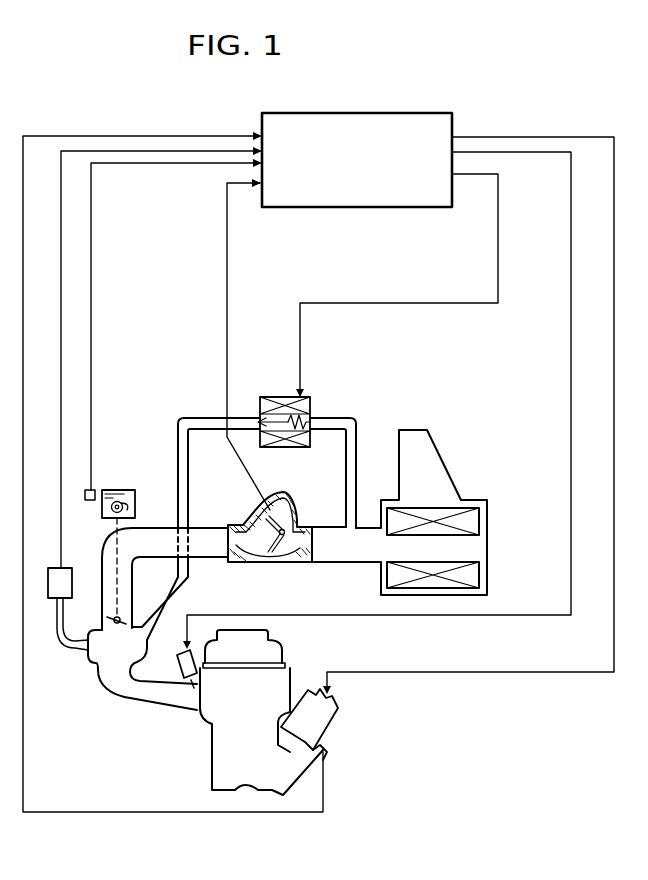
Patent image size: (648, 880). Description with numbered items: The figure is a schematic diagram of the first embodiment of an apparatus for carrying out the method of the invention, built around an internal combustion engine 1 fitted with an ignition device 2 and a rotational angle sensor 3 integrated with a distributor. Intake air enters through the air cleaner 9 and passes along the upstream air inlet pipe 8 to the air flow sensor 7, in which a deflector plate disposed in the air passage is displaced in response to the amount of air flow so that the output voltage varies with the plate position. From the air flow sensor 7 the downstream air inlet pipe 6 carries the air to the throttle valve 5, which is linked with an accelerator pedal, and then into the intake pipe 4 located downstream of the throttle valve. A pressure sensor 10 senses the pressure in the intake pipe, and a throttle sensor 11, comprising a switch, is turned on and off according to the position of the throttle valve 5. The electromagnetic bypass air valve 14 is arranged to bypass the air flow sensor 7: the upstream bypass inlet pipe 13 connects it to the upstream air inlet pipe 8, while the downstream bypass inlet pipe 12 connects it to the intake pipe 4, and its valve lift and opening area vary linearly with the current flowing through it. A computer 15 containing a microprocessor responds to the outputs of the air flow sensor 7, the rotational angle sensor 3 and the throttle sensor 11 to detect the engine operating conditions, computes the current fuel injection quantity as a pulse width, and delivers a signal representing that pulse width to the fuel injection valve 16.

The internal combustion engine 1 is at (277, 683).
The ignition device 2 is at (333, 712).
The rotational angle sensor 3 is at (327, 752).
The intake pipe 4 is at (100, 655).
The throttle valve 5 is at (125, 621).
The downstream air inlet pipe 6 is at (205, 545).
The air flow sensor 7 is at (242, 558).
The upstream air inlet pipe 8 is at (359, 553).
The air cleaner 9 is at (471, 575).
The pressure sensor 10 is at (65, 568).
The throttle sensor 11 is at (115, 490).
The downstream bypass inlet pipe 12 is at (182, 418).
The upstream bypass inlet pipe 13 is at (357, 419).
The electromagnetic bypass air valve 14 is at (310, 397).
The computer 15 is at (397, 113).
The fuel injection valve 16 is at (178, 675).